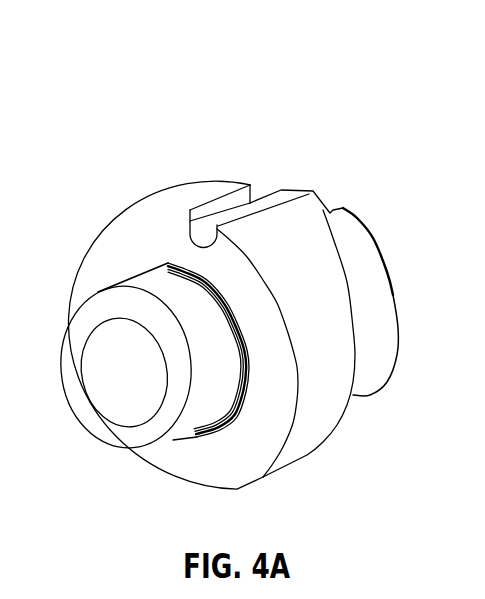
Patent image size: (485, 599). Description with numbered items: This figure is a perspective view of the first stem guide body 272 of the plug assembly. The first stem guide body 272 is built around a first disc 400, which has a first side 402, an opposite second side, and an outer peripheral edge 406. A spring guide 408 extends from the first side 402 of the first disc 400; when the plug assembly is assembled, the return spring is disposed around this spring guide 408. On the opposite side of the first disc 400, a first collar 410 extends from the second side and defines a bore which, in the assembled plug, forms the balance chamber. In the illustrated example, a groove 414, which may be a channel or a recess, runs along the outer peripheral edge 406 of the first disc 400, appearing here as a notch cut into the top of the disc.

The first stem guide body 272 is at (186, 61).
The first disc 400 is at (190, 203).
The first side 402 is at (134, 226).
The outer peripheral edge 406 is at (286, 250).
The spring guide 408 is at (142, 277).
The first collar 410 is at (382, 295).
The groove 414 is at (222, 188).